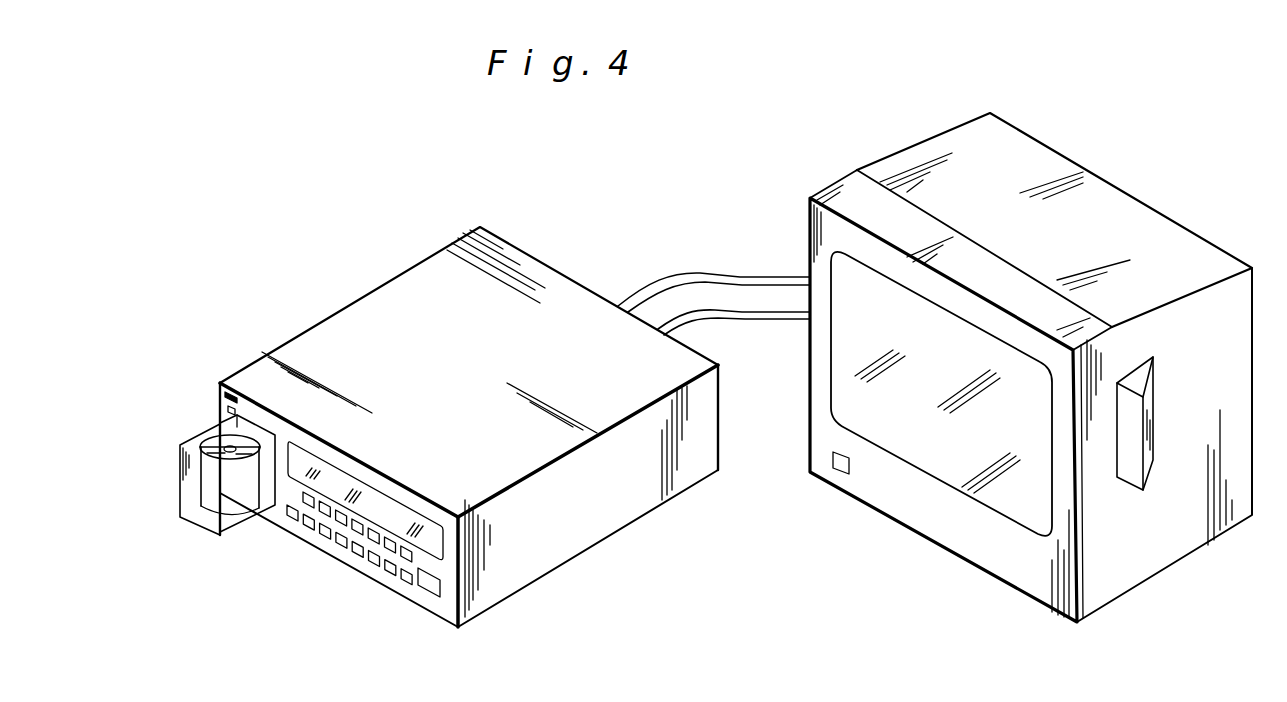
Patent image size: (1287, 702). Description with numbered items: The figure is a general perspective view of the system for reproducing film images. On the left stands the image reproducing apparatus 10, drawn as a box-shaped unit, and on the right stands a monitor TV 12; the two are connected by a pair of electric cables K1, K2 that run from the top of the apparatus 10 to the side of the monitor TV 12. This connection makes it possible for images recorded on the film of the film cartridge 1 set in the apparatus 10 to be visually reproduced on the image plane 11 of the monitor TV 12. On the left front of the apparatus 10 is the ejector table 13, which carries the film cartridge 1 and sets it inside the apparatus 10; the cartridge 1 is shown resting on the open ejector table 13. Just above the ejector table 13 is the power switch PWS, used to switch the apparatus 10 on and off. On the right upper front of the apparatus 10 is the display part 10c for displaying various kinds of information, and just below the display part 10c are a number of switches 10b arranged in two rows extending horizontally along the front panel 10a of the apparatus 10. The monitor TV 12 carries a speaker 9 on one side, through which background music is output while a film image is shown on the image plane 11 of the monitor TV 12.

The film cartridge 1 is at (242, 497).
The speaker 9 is at (1133, 475).
The image reproducing apparatus 10 is at (487, 394).
The front panel 10a is at (266, 531).
The switches 10b is at (441, 625).
The display part 10c is at (388, 511).
The image plane 11 is at (960, 475).
The monitor TV 12 is at (1074, 249).
The ejector table 13 is at (204, 518).
The electric cable K1 is at (707, 272).
The electric cable K2 is at (745, 316).
The power switch PWS is at (220, 397).